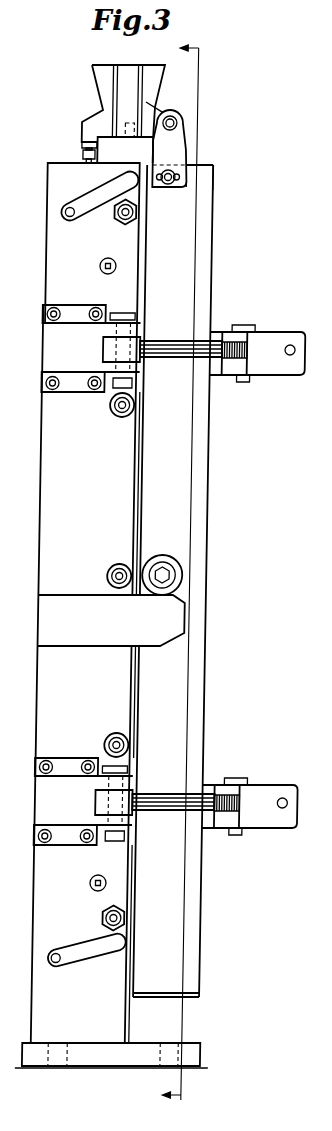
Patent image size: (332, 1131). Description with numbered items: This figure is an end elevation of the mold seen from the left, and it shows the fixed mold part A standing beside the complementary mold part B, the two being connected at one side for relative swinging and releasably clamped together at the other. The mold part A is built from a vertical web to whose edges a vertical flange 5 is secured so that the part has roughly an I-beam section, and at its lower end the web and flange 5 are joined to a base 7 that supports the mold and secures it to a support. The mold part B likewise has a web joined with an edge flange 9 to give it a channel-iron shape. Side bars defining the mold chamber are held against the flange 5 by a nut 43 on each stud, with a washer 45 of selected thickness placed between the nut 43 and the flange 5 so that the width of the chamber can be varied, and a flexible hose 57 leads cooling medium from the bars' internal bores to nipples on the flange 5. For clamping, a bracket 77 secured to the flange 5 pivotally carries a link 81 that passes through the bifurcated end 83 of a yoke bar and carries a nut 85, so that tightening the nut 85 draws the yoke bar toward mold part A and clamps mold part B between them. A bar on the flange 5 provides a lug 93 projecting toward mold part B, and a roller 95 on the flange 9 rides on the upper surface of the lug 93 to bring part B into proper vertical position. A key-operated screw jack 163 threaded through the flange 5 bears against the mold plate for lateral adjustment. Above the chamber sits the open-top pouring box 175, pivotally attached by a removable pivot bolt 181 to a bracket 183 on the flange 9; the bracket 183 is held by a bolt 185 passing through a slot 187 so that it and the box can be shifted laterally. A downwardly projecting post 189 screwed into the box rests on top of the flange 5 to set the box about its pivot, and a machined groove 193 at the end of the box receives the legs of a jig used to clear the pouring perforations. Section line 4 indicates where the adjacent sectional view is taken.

The section line 4- 4 is at (191, 574).
The fixed mold part A is at (65, 164).
The complementary mold part B is at (208, 168).
The vertical flange 5 is at (122, 694).
The base 7 is at (161, 1052).
The edge flange 9 is at (208, 465).
The nut 43 is at (125, 224).
The washer 45 is at (132, 224).
The flexible hose 57 is at (101, 198).
The bracket 77 is at (74, 330).
The link 81 is at (176, 350).
The bifurcated end 83 is at (243, 367).
The nut 85 is at (284, 340).
The lug 93 is at (185, 617).
The roller 95 is at (179, 549).
The screw jack 163 is at (104, 265).
The pouring box 175 is at (103, 78).
The pivot bolt 181 is at (174, 117).
The bracket 183 is at (178, 135).
The bolt 185 is at (172, 170).
The slot 187 is at (187, 186).
The post 189 is at (100, 151).
The groove 193 is at (129, 92).